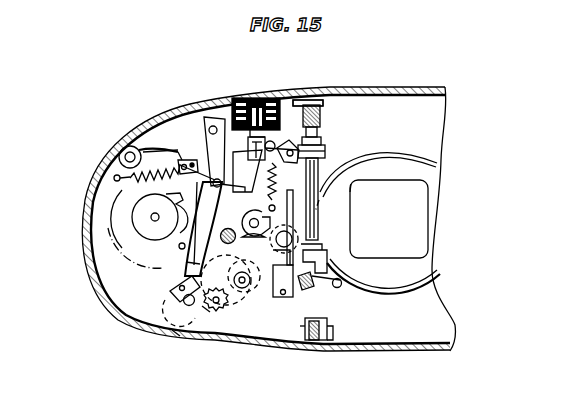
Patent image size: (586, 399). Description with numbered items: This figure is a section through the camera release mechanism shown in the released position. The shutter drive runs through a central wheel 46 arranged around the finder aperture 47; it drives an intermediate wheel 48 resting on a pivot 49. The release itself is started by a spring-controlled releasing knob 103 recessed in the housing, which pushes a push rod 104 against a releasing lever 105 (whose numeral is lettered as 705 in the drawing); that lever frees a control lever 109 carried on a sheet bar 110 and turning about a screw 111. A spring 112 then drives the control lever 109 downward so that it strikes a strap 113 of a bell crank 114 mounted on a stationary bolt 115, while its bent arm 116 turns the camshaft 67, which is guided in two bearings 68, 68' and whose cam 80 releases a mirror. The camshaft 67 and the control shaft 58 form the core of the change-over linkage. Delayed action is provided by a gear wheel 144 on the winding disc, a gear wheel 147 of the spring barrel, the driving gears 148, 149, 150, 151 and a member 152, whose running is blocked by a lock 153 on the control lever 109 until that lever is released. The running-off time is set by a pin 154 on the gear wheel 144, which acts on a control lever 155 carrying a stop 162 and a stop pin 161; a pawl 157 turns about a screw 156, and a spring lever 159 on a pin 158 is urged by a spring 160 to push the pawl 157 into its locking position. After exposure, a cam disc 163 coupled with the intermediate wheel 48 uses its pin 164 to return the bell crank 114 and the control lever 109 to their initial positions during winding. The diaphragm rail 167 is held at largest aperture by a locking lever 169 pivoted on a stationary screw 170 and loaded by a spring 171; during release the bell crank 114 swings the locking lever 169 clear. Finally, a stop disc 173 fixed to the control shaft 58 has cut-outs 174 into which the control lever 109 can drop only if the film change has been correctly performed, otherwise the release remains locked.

The central wheel 46 is at (360, 158).
The finder aperture 47 is at (378, 181).
The intermediate wheel 48 is at (272, 298).
The pivot 49 is at (328, 347).
The control shaft 58 is at (153, 216).
The camshaft 67 is at (352, 185).
The bearing 68 is at (330, 118).
The bearing 68' is at (268, 239).
The cam 80 is at (326, 152).
The releasing knob 103 is at (268, 134).
The push rod 104 is at (322, 134).
The releasing lever 105 is at (308, 103).
The mounting plate 705 is at (313, 104).
The control lever 109 is at (128, 148).
The sheet bar 110 is at (194, 160).
The screw 111 is at (119, 154).
The spring 112 is at (280, 186).
The strap 113 is at (260, 187).
The bell crank 114 is at (281, 202).
The stationary bolt 115 is at (300, 151).
The bent arm 116 is at (284, 246).
The gear wheel 144 is at (130, 197).
The gear wheel 147 is at (219, 270).
The driving gear 148 is at (235, 297).
The driving gear 149 is at (258, 302).
The driving gear 150 is at (205, 305).
The driving gear 151 is at (175, 332).
The member 152 is at (170, 306).
The lock 153 is at (180, 283).
The pin 154 is at (179, 247).
The control lever 155 is at (187, 262).
The screw 156 is at (243, 100).
The pawl 157 is at (208, 122).
The pin 158 is at (181, 156).
The spring lever 159 is at (166, 151).
The spring 160 is at (114, 177).
The stop pin 161 is at (244, 164).
The stop 162 is at (122, 192).
The cam disc 163 is at (265, 272).
The pin 164 is at (290, 216).
The rail 167 is at (330, 268).
The locking lever 169 is at (318, 300).
The stationary screw 170 is at (316, 283).
The spring 171 is at (341, 285).
The stop disc 173 is at (134, 218).
The cut-out 174 is at (150, 232).